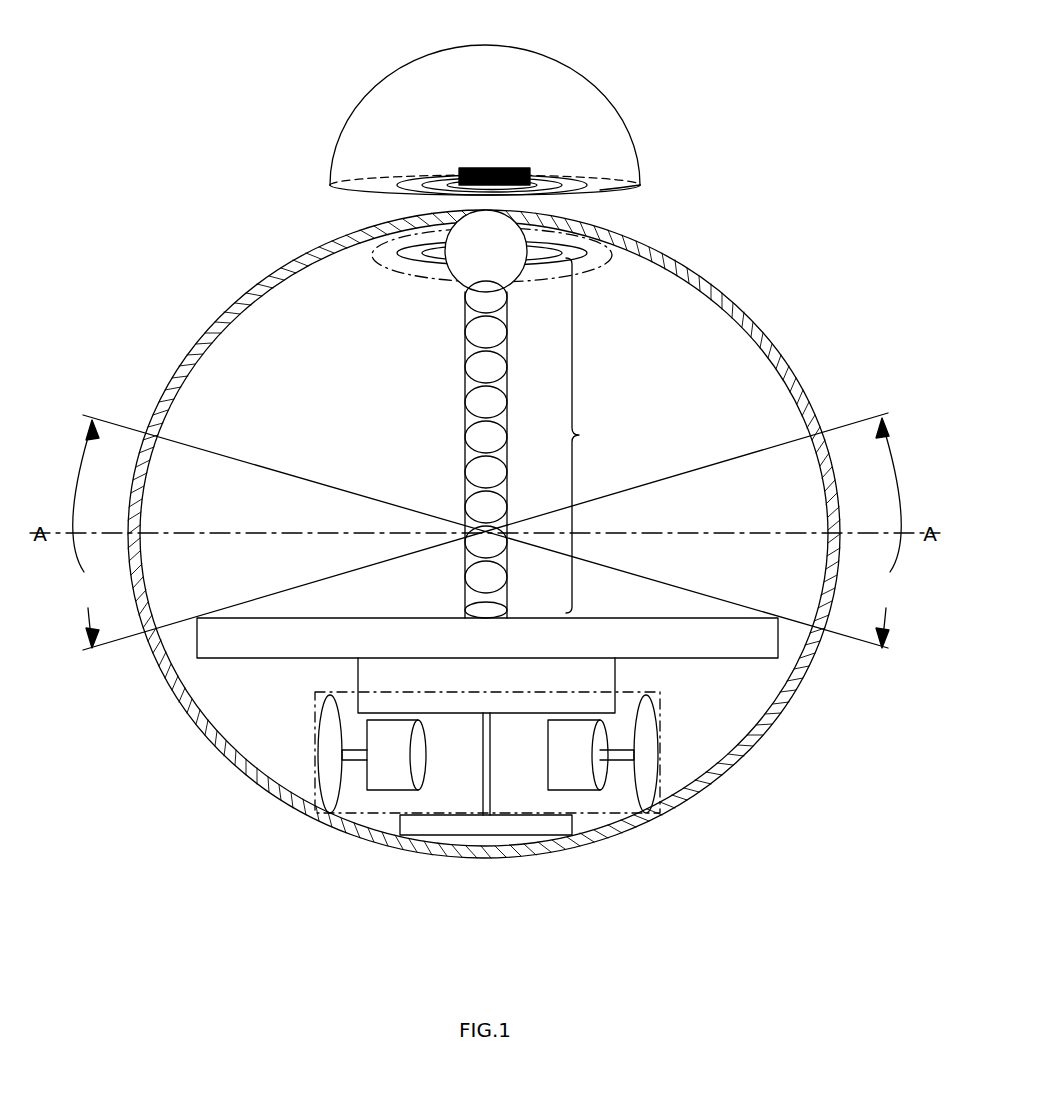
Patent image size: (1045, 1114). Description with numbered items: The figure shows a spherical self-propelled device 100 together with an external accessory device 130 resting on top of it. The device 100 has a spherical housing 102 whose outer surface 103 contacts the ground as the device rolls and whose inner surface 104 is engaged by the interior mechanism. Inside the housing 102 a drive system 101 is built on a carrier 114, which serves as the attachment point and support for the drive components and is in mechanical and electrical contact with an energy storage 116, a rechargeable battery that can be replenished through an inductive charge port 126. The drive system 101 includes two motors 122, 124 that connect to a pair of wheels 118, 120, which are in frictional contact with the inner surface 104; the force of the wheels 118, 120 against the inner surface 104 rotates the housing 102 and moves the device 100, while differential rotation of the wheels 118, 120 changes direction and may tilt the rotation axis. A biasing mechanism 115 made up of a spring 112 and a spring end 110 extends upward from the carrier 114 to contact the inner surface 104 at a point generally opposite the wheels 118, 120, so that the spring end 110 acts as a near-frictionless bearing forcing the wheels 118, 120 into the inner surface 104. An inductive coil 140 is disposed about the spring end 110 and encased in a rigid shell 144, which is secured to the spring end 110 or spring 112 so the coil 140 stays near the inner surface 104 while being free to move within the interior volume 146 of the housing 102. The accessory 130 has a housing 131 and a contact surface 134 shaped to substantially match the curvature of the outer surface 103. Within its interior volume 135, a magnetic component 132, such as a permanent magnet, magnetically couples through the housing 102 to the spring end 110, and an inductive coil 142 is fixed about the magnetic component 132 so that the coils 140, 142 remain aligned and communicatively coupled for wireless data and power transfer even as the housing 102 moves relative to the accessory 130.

The self-propelled device 100 is at (184, 188).
The drive system 101 is at (312, 745).
The spherical housing 102 is at (760, 279).
The outer surface 103 is at (820, 418).
The inner surface 104 is at (745, 328).
The spring end 110 is at (468, 249).
The spring 112 is at (463, 348).
The carrier 114 is at (523, 648).
The biasing mechanism 115 is at (595, 435).
The energy storage 116 is at (551, 684).
The wheel 118 is at (326, 710).
The wheel 120 is at (656, 720).
The motor 122 is at (371, 754).
The motor 124 is at (548, 754).
The inductive charge port 126 is at (505, 835).
The external accessory device 130 is at (418, 82).
The housing 131 is at (568, 60).
The magnetic component 132 is at (498, 166).
The contact surface 134 is at (620, 186).
The interior volume 135 is at (576, 110).
The inductive coil 140 is at (392, 262).
The inductive coil 142 is at (413, 180).
The rigid shell 144 is at (605, 270).
The interior volume 146 is at (798, 516).